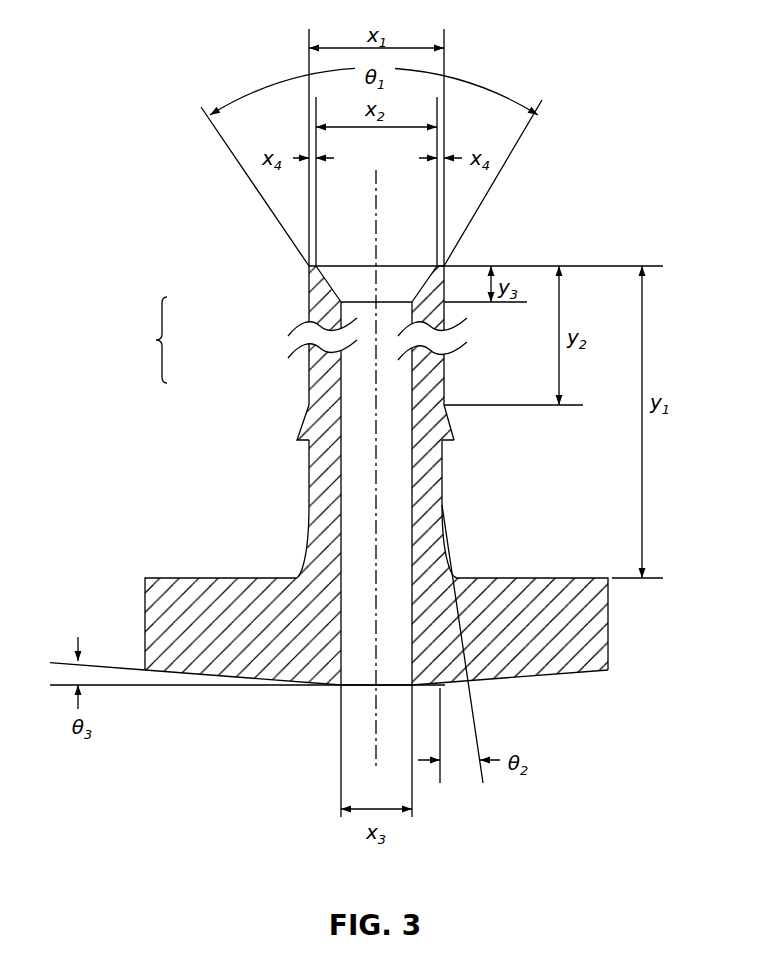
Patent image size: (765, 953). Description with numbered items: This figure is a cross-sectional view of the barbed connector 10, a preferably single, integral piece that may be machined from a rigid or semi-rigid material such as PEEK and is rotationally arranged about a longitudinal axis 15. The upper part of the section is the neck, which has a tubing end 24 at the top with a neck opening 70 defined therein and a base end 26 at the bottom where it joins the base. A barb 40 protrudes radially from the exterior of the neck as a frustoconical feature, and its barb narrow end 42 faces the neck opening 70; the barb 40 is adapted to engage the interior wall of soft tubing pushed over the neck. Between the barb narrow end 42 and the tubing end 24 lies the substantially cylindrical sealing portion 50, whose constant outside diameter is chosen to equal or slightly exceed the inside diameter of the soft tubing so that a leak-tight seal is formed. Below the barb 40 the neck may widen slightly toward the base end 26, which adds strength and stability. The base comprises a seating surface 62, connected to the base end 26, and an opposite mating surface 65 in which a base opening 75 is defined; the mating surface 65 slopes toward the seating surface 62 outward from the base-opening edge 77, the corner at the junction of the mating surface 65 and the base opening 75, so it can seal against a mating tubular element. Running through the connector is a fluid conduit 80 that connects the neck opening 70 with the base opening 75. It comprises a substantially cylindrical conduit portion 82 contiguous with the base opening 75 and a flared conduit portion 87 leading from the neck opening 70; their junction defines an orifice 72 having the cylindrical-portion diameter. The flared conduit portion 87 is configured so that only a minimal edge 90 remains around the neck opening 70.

The barbed connector 10 is at (375, 443).
The longitudinal axis 15 is at (373, 742).
The tubing end 24 is at (446, 266).
The base end 26 is at (453, 575).
The barb 40 is at (450, 427).
The barb narrow end 42 is at (445, 410).
The substantially cylindrical sealing portion 50 is at (446, 374).
The seating surface 62 is at (240, 573).
The mating surface 65 is at (555, 675).
The neck opening 70 is at (376, 266).
The orifice 72 is at (389, 302).
The base opening 75 is at (373, 687).
The base-opening edge 77 is at (337, 687).
The fluid conduit 80 is at (143, 340).
The substantially cylindrical conduit portion 82 is at (360, 378).
The flared conduit portion 87 is at (351, 280).
The minimal edge 90 is at (309, 266).